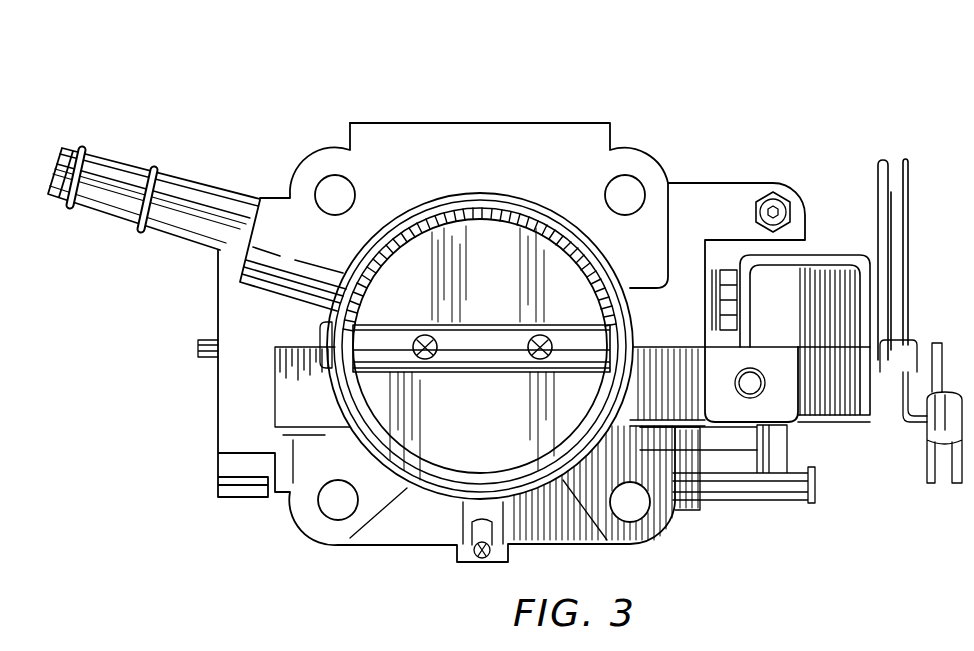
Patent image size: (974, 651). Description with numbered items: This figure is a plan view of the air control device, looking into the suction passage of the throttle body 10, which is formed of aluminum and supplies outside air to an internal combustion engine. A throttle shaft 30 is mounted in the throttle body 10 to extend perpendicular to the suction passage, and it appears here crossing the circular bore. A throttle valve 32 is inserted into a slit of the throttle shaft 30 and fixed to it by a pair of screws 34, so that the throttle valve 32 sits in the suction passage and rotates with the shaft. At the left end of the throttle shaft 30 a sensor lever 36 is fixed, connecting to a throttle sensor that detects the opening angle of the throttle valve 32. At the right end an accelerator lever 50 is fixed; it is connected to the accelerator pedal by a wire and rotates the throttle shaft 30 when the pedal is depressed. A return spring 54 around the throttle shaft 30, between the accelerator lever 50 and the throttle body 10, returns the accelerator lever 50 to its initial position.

The throttle body 10 is at (467, 193).
The throttle shaft 30 is at (480, 314).
The throttle valve 32 is at (530, 255).
The screws 34 is at (424, 334).
The sensor lever 36 is at (198, 352).
The accelerator lever 50 is at (897, 250).
The return spring 54 is at (832, 418).